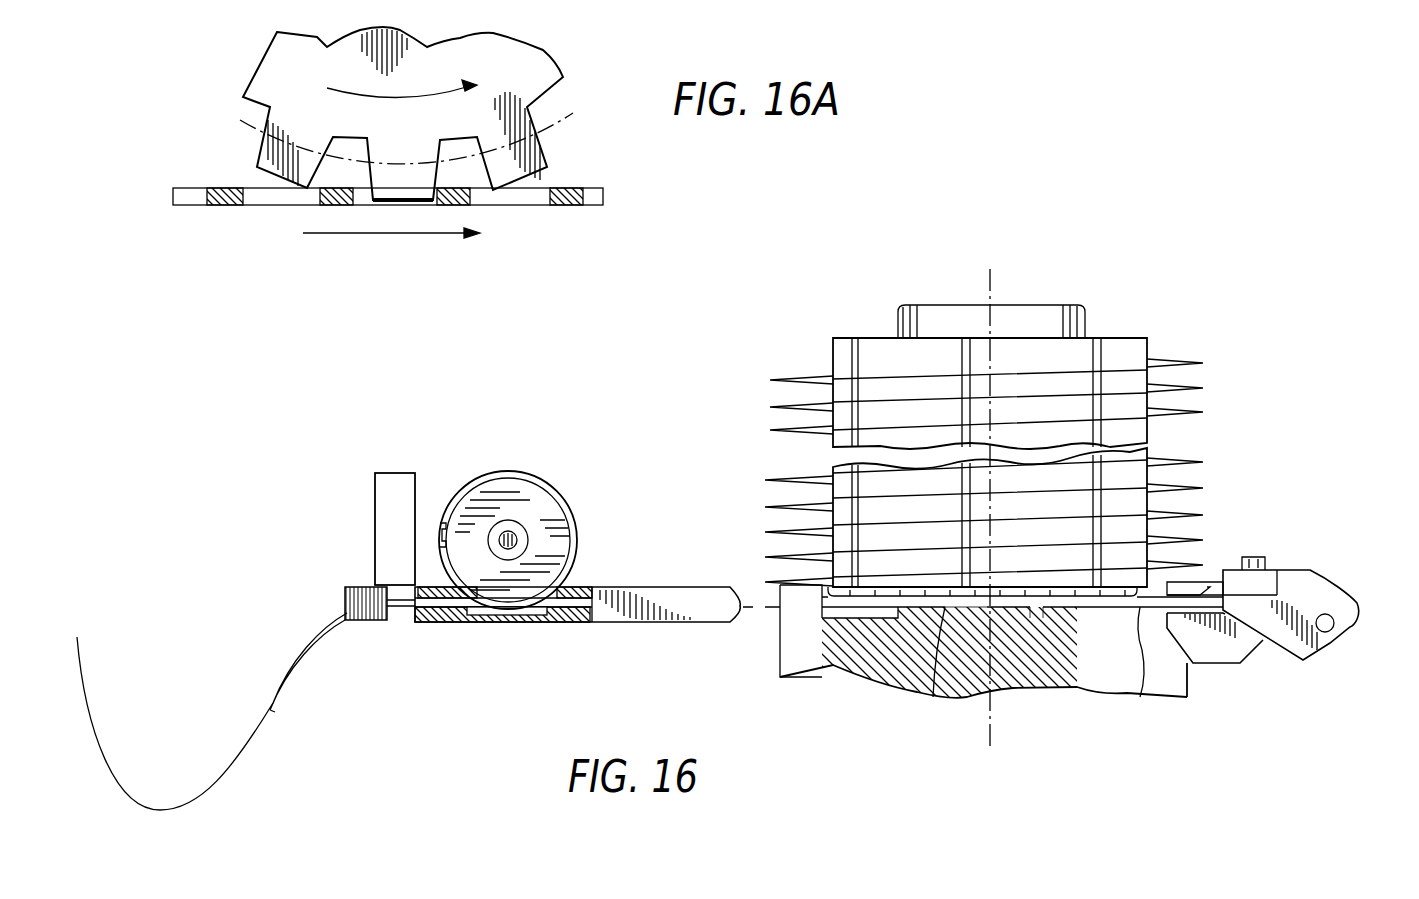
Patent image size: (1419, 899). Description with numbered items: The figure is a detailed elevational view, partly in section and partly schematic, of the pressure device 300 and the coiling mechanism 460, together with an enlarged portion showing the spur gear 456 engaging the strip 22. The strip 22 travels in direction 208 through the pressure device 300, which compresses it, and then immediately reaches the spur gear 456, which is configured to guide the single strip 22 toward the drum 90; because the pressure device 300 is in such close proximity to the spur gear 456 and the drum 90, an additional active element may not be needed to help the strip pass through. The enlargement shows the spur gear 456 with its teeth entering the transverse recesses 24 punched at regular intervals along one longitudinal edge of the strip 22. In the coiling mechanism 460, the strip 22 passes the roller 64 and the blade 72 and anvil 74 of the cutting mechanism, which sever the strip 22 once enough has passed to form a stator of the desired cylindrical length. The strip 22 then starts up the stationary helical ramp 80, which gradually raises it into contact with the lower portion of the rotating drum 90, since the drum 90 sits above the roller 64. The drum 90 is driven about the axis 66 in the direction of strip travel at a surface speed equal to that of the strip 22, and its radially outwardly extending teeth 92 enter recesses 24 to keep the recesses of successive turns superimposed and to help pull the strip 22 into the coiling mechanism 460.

In FIG. 16A, the strip 22 is at (227, 205).
In FIG. 16A, the transverse recesses 24 is at (513, 195).
In FIG. 16A, the spur gear 456 is at (537, 73).
In FIG. 16, the spur gear 456 is at (540, 508).
In FIG. 16, the pressure device 300 is at (393, 502).
In FIG. 16, the direction 208 is at (673, 657).
In FIG. 16, the stationary helical ramp 80 is at (760, 590).
In FIG. 16, the coiling mechanism 460 is at (984, 469).
In FIG. 16, the drum 90 is at (1113, 365).
In FIG. 16, the teeth 92 is at (865, 345).
In FIG. 16, the axis 66 is at (990, 287).
In FIG. 16, the roller 64 is at (945, 607).
In FIG. 16, the anvil 74 is at (1207, 582).
In FIG. 16, the blade 72 is at (1230, 640).